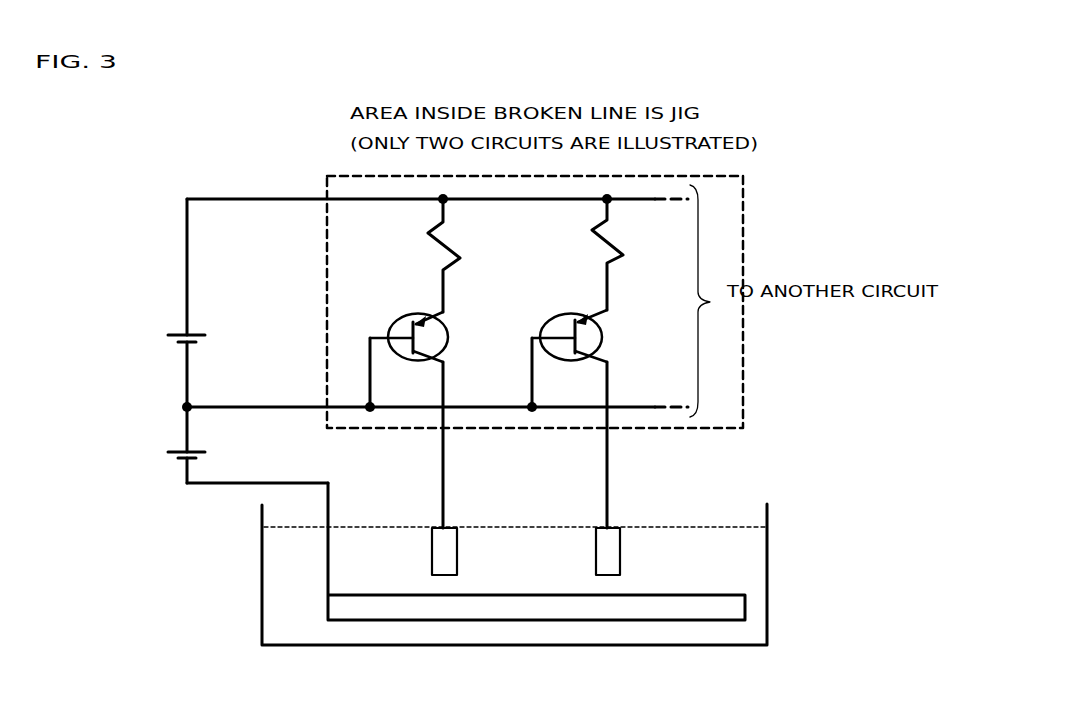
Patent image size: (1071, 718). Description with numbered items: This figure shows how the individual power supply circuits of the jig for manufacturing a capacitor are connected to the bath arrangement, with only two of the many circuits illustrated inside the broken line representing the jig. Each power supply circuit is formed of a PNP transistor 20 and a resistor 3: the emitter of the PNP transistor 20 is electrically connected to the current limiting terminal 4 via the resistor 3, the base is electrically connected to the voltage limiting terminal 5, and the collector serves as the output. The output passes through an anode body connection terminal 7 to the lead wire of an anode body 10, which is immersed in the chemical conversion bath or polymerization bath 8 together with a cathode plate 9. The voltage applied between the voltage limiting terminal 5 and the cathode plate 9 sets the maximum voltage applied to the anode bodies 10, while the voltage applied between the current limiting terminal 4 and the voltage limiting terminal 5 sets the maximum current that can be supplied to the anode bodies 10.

The resistor 3 is at (612, 245).
The current limiting terminal 4 is at (327, 199).
The voltage limiting terminal 5 is at (327, 407).
The anode body connection terminal 7 is at (443, 432).
The chemical conversion bath or polymerization bath 8 is at (262, 581).
The cathode plate 9 is at (503, 606).
The anode body 10 is at (432, 560).
The PNP transistor 20 is at (613, 340).